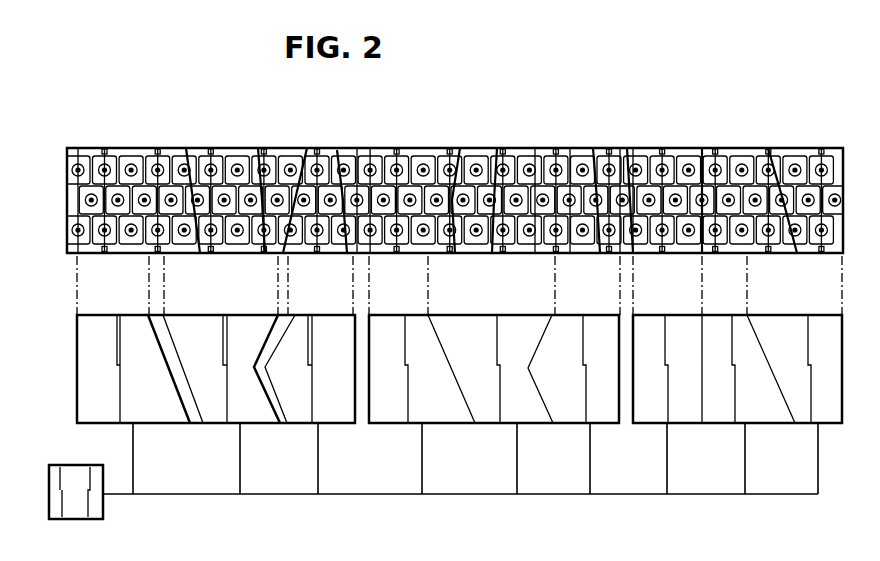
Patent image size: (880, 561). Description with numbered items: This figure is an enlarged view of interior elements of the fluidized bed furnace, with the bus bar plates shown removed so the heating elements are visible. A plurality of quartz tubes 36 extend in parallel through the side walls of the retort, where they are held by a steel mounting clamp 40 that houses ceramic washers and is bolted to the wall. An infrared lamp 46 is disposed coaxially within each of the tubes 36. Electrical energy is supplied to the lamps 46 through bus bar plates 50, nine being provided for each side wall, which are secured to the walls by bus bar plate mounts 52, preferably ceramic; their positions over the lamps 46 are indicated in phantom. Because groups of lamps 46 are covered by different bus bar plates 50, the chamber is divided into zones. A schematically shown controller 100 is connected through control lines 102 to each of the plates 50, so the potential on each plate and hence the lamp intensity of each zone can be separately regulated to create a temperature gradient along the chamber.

The quartz tubes 36 is at (337, 150).
The steel mounting clamp 40 is at (497, 148).
The infrared lamp 46 is at (570, 148).
The bus bar plates 50 is at (95, 355).
The bus bar plate mounts 52 is at (258, 148).
The controller 100 is at (75, 472).
The control lines 102 is at (257, 495).